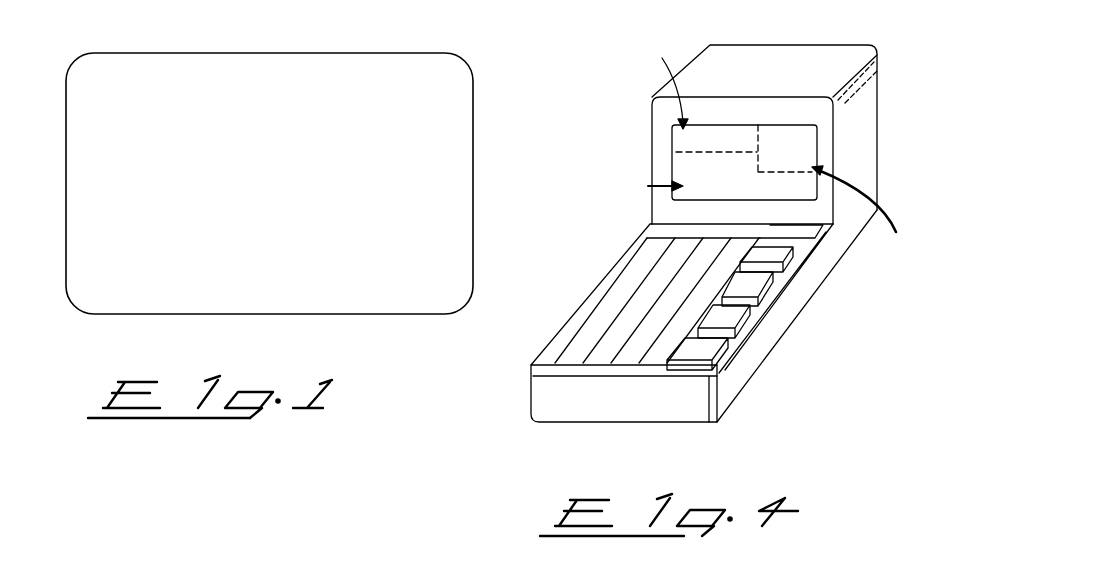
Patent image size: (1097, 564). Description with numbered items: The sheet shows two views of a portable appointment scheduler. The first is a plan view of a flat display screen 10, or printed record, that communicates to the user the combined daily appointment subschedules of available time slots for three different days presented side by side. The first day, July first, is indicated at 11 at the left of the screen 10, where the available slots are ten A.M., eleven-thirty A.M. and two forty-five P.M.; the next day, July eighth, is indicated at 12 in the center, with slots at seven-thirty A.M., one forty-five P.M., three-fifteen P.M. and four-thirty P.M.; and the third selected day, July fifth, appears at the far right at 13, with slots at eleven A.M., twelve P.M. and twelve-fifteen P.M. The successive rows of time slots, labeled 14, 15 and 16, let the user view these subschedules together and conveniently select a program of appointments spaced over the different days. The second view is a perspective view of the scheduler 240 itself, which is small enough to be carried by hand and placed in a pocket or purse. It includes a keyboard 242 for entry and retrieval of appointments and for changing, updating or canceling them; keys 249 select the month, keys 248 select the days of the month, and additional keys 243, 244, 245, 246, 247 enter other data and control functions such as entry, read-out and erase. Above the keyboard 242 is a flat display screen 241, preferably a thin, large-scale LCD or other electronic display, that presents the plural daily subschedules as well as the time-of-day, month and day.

In FIG. 1, the screen 10 is at (342, 70).
In FIG. 1, the first day indication 11 is at (143, 70).
In FIG. 1, the next day indication 12 is at (280, 62).
In FIG. 1, the third selected day indication 13 is at (428, 66).
In FIG. 1, the first appointment row 14 is at (103, 127).
In FIG. 1, the second appointment row 15 is at (88, 178).
In FIG. 1, the third appointment row 16 is at (83, 213).
In FIG. 4, the scheduler 240 is at (826, 48).
In FIG. 4, the flat display screen 241 is at (752, 124).
In FIG. 4, the keyboard 242 is at (665, 355).
In FIG. 4, the additional key 243 is at (805, 233).
In FIG. 4, the additional key 244 is at (792, 258).
In FIG. 4, the additional key 245 is at (760, 300).
In FIG. 4, the additional key 246 is at (738, 329).
In FIG. 4, the additional key 247 is at (716, 361).
In FIG. 4, the day keys 248 is at (603, 350).
In FIG. 4, the month keys 249 is at (602, 306).